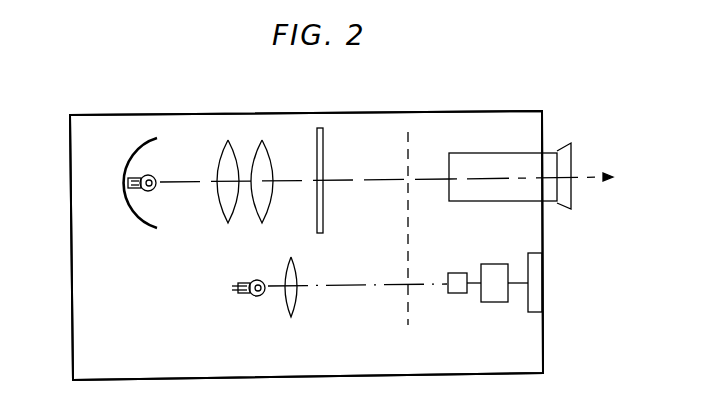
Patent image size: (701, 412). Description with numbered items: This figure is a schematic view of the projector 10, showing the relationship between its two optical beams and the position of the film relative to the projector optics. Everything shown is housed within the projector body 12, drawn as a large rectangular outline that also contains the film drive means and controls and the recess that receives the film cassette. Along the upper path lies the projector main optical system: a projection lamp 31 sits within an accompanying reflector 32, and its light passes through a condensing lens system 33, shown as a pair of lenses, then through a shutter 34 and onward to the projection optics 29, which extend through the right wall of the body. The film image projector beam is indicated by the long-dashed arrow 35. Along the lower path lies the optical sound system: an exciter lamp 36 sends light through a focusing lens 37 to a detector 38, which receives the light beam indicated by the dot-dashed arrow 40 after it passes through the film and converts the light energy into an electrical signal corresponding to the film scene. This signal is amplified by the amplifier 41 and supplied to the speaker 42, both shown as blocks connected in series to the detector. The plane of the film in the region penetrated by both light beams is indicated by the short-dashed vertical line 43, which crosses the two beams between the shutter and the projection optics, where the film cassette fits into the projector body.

The projector 10 is at (474, 93).
The projector body 12 is at (103, 114).
The projection optics 29 is at (550, 160).
The projection lamp 31 is at (155, 176).
The reflector 32 is at (137, 147).
The condensing lens system 33 is at (259, 140).
The shutter 34 is at (322, 129).
The film image projector beam 35 is at (366, 179).
The exciter lamp 36 is at (250, 298).
The focusing lens 37 is at (293, 306).
The detector 38 is at (462, 295).
The light beam 40 is at (368, 288).
The amplifier 41 is at (503, 303).
The speaker 42 is at (537, 312).
The plane of the film 43 is at (406, 228).